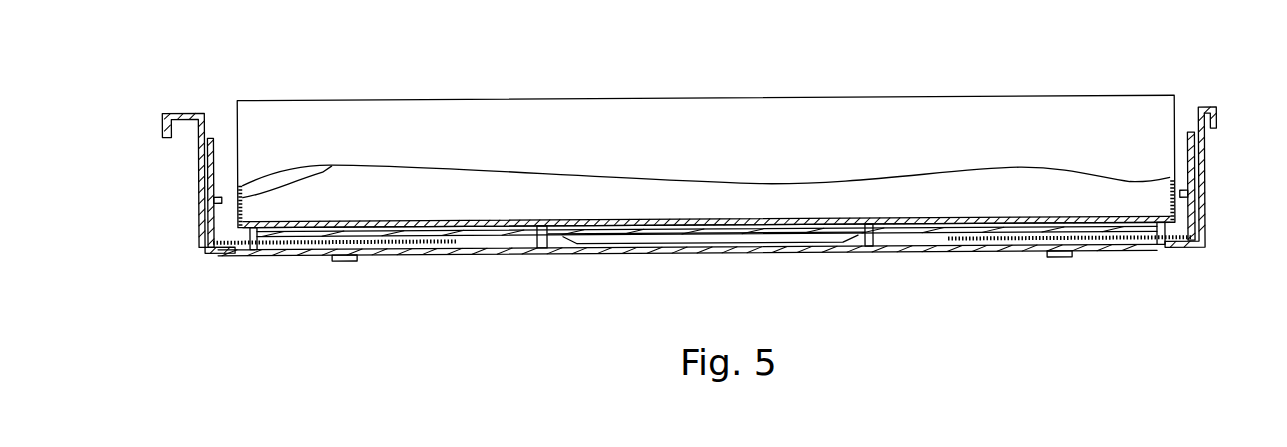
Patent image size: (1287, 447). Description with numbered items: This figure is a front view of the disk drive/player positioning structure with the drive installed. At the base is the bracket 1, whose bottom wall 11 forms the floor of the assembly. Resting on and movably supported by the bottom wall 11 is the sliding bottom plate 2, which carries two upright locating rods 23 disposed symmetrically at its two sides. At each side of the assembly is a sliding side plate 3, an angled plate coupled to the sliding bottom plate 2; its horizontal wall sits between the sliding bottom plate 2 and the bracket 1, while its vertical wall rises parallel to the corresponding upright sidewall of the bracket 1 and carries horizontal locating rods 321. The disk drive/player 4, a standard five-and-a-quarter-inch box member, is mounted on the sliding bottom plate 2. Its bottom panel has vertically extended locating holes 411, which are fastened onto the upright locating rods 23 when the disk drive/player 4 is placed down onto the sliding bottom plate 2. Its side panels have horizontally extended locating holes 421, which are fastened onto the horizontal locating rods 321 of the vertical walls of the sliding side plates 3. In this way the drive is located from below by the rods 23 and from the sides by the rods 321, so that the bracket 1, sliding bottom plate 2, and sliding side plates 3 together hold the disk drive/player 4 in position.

The bracket 1 is at (307, 256).
The bottom wall 11 is at (503, 255).
The sliding bottom plate 2 is at (927, 232).
The upright locating rod 23 is at (258, 256).
The sliding side plate 3 is at (227, 256).
The horizontal locating rod 321 is at (219, 196).
The disk drive/player 4 is at (550, 117).
The vertically extended locating hole 411 is at (317, 170).
The horizontally extended locating hole 421 is at (252, 220).